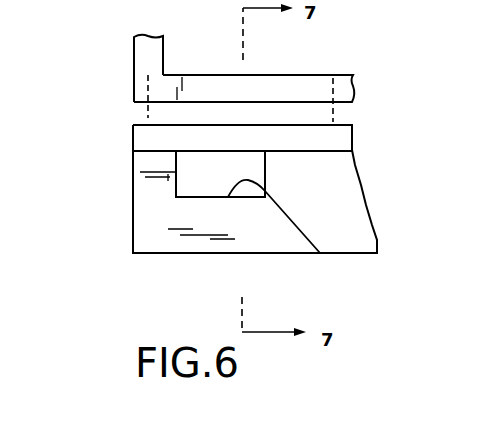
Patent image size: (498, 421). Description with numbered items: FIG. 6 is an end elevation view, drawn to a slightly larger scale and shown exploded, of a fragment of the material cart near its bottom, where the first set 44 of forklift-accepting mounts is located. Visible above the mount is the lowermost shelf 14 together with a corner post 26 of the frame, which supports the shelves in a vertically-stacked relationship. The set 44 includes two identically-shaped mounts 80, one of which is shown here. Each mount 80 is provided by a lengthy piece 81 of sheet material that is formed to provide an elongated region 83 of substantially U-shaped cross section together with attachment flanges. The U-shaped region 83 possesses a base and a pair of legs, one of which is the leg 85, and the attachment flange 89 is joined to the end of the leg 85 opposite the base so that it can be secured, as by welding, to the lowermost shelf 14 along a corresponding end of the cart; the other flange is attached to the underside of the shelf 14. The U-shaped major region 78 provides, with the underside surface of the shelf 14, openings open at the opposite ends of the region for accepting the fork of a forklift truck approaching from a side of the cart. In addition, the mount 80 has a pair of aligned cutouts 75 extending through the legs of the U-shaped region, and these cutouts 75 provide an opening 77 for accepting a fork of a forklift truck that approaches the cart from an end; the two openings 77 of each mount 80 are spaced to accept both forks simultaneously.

The corner post 26 is at (134, 57).
The lowermost shelf 14 is at (194, 75).
The attachment flange 89 is at (133, 141).
The mount 80 is at (133, 190).
The leg 85 is at (157, 210).
The cutout 75 is at (217, 189).
The opening 77 is at (320, 253).
The U-shaped major region 78 is at (152, 254).
The lengthy piece of material 81 is at (356, 254).
The elongated region of U-shaped cross section 83 is at (377, 255).
The first set of forklift-accepting mounts 44 is at (108, 256).